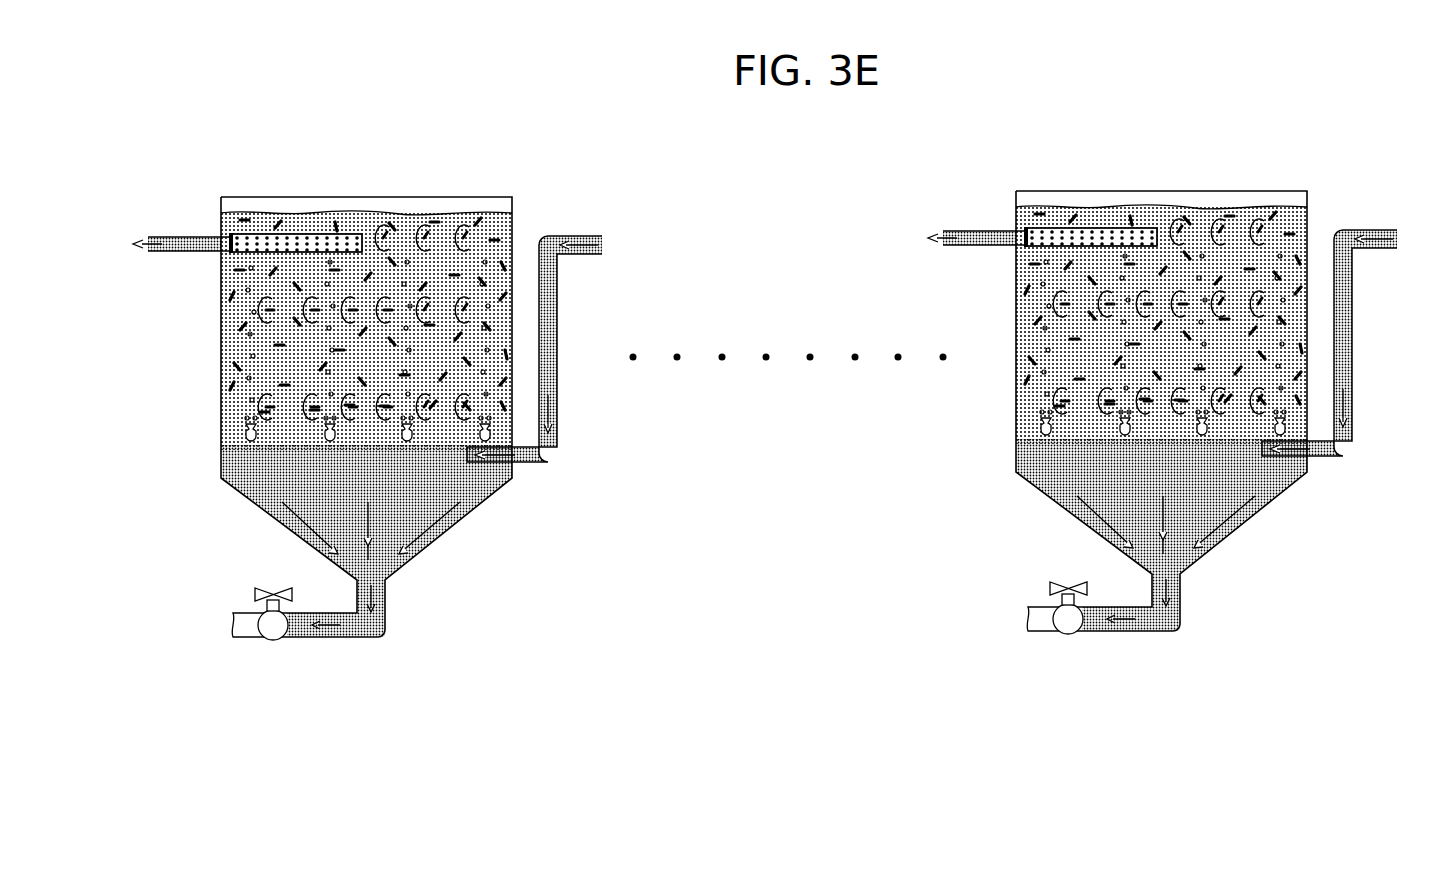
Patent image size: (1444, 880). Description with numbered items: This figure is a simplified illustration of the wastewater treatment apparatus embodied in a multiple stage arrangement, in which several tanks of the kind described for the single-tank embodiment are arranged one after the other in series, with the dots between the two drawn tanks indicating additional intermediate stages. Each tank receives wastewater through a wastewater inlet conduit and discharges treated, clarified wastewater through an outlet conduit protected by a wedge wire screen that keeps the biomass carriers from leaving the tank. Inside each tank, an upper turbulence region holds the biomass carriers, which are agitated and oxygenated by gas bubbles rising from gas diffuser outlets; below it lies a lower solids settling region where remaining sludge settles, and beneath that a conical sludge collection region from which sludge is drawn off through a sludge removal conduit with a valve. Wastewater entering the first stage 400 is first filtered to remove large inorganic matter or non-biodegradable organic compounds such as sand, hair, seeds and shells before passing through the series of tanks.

The first stage 400 is at (1330, 118).